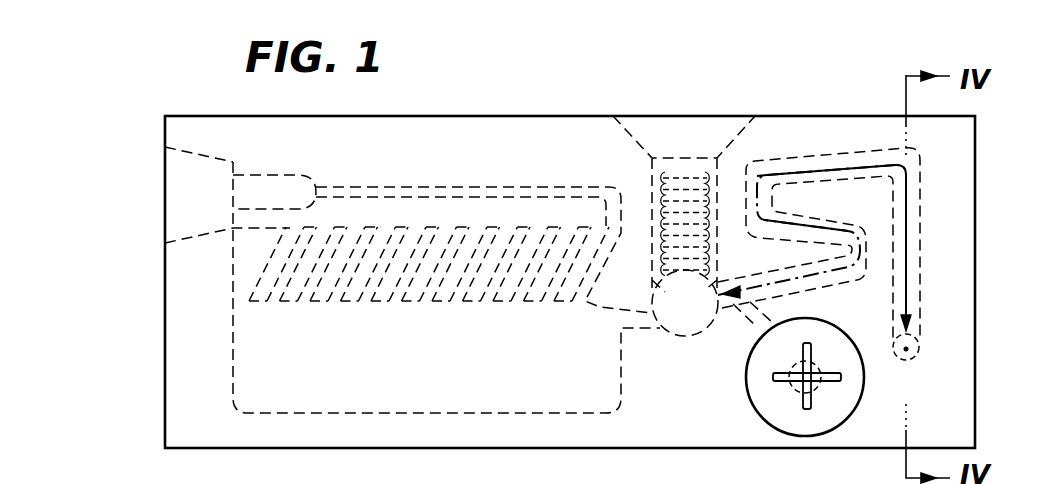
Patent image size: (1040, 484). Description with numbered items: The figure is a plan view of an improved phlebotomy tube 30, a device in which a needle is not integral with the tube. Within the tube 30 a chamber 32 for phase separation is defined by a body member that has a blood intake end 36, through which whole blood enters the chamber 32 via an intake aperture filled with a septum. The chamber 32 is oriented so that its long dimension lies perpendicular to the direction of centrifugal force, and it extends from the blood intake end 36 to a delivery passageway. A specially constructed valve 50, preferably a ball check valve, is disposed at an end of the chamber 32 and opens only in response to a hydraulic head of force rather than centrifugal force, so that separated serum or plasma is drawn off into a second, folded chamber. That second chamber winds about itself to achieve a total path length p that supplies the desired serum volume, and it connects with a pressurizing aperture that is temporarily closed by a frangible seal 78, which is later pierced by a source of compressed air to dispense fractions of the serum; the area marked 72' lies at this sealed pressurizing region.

The phlebotomy tube 30 is at (566, 99).
The chamber 32 is at (397, 356).
The blood intake end 36 is at (150, 299).
The valve 50 is at (688, 350).
The valve seat 72' is at (780, 422).
The frangible seal 78 is at (850, 387).
The path length p is at (812, 174).